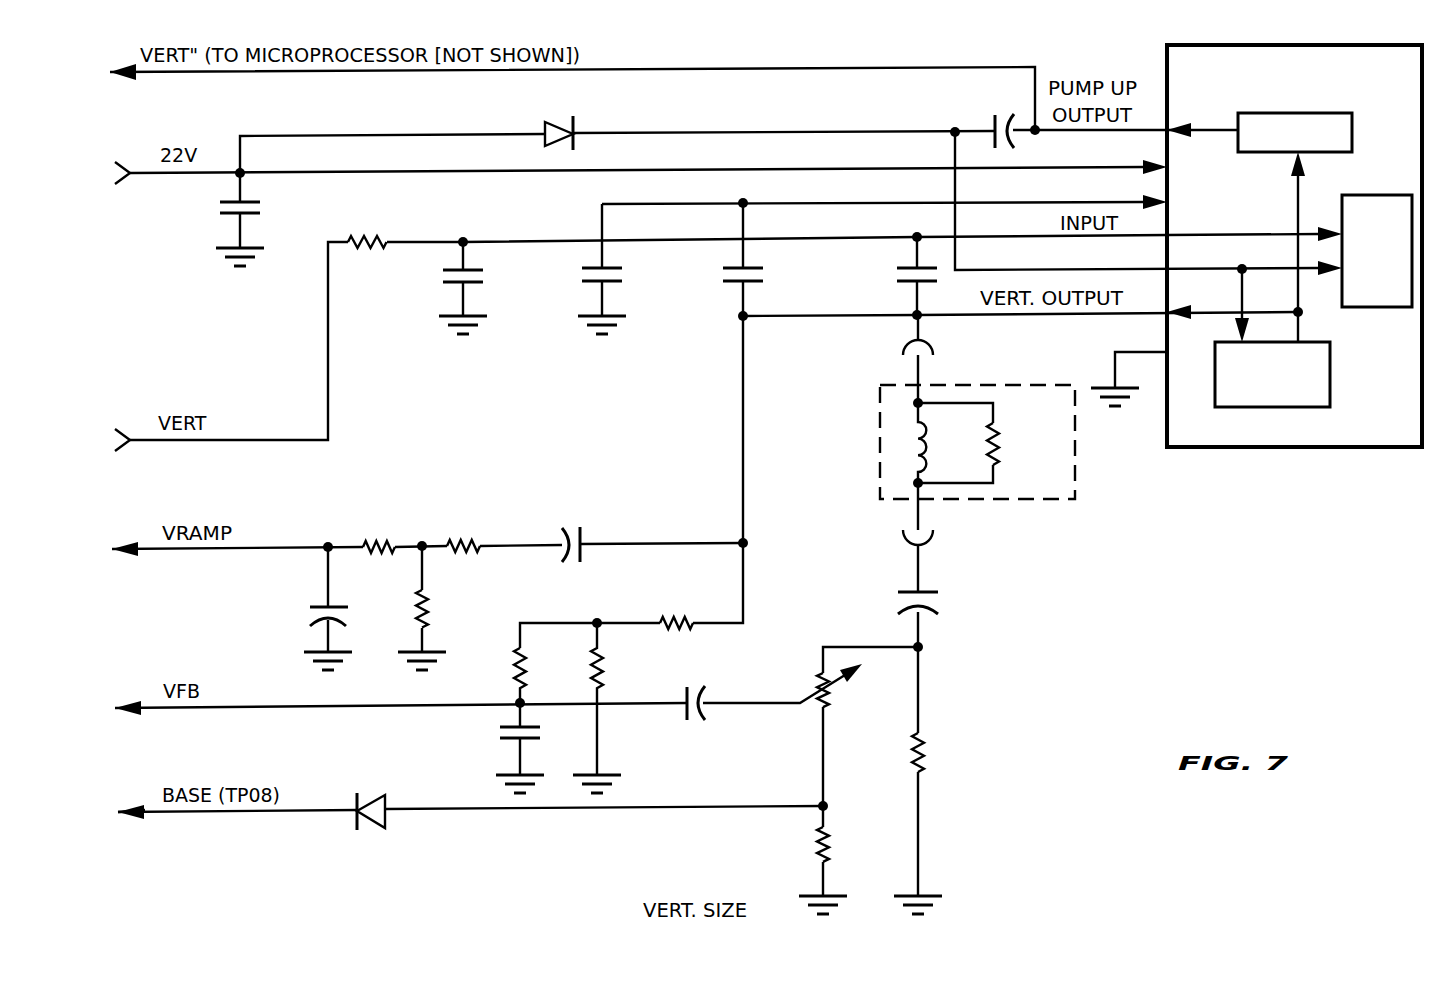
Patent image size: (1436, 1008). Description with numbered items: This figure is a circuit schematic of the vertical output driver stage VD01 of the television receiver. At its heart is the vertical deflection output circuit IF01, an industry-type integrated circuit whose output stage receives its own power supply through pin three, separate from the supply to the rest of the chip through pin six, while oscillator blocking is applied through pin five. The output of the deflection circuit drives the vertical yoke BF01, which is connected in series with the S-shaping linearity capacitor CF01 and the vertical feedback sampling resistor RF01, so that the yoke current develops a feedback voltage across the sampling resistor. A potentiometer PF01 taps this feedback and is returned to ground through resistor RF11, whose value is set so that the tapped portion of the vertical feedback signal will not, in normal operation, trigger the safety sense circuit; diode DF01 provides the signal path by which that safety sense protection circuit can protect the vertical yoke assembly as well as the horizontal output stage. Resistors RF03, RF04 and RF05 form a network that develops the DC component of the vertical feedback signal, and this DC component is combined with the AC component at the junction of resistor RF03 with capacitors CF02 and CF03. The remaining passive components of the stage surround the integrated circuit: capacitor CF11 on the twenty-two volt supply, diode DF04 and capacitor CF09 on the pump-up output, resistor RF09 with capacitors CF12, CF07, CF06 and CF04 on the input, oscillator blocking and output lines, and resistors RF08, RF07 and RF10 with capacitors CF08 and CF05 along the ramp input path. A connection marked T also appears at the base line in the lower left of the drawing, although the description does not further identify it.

The vertical deflection output circuit IF01 is at (1310, 447).
The capacitor CF11 is at (216, 219).
The diode DF04 is at (527, 116).
The resistor RF09 is at (372, 215).
The capacitor CF12 is at (438, 288).
The capacitor CF07 is at (576, 269).
The capacitor CF06 is at (717, 259).
The capacitor CF04 is at (888, 276).
The capacitor CF09 is at (947, 114).
The vertical yoke BF01 is at (1042, 430).
The S-shaping linearity capacitor CF01 is at (946, 607).
The potentiometer PF01 is at (854, 703).
The vertical feedback sampling resistor RF01 is at (942, 821).
The resistor RF11 is at (805, 869).
The resistor RF08 is at (379, 520).
The resistor RF07 is at (461, 519).
The capacitor CF05 is at (576, 514).
The capacitor CF08 is at (307, 608).
The resistor RF10 is at (444, 608).
The resistor RF05 is at (680, 595).
The resistor RF03 is at (494, 672).
The resistor RF04 is at (618, 708).
The capacitor CF03 is at (496, 748).
The capacitor CF02 is at (690, 725).
The diode DF01 is at (377, 838).
The base test point TP08 T is at (134, 826).
The vertical output driver stage VD01 is at (1143, 625).